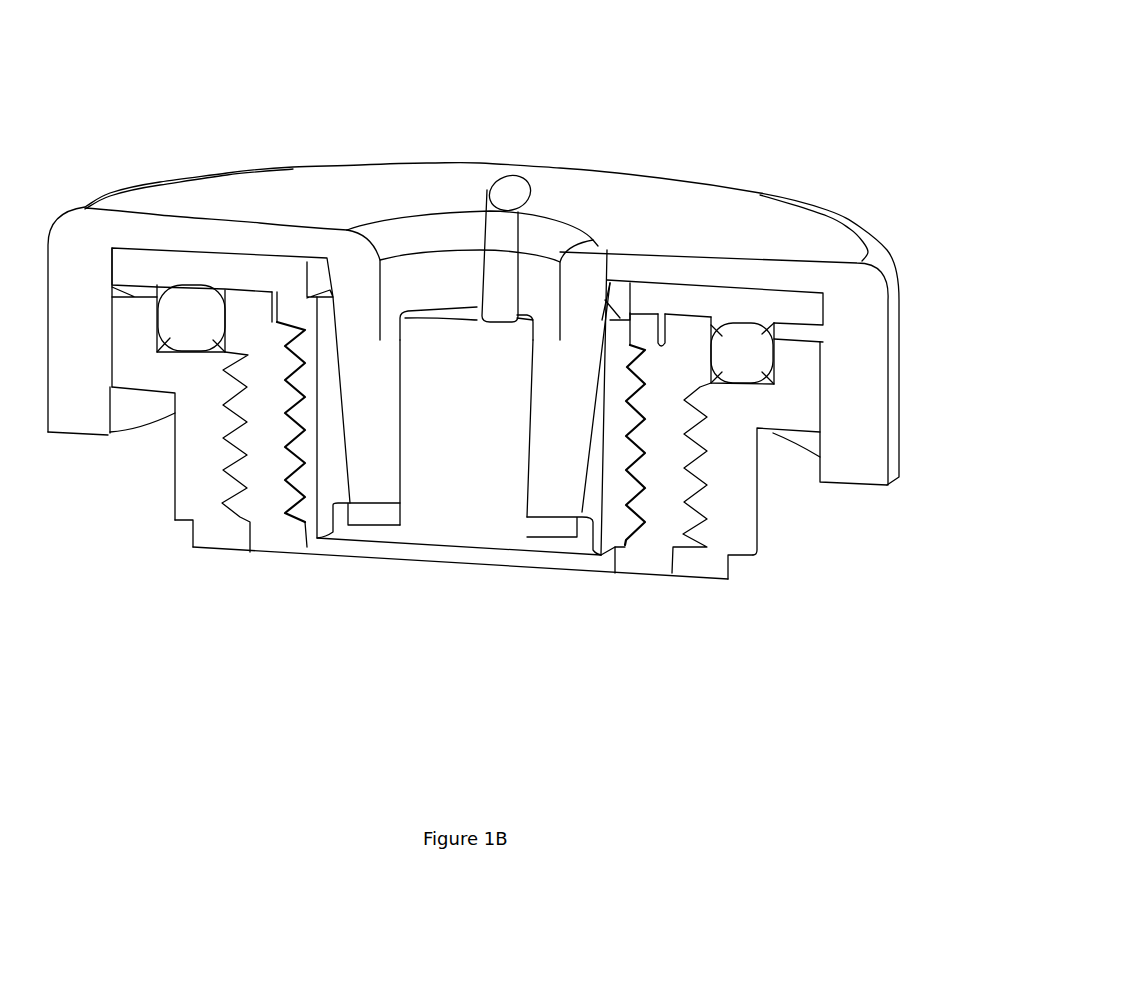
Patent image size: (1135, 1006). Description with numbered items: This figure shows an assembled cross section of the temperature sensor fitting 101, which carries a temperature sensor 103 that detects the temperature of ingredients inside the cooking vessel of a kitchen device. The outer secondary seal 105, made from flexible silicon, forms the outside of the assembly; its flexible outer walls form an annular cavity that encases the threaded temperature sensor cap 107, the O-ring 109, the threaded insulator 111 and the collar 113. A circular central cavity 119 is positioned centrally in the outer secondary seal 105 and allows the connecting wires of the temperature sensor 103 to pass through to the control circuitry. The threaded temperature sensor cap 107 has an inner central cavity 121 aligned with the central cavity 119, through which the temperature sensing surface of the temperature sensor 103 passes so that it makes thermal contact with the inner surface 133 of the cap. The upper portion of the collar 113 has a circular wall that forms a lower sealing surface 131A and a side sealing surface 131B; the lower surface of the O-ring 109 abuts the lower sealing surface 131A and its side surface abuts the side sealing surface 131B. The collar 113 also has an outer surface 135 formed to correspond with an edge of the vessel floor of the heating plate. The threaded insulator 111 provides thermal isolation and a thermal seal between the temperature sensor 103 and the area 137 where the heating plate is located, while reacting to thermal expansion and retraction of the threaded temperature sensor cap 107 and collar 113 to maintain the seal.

The temperature sensor fitting 101 is at (473, 253).
The temperature sensor 103 is at (459, 431).
The outer secondary seal 105 is at (467, 366).
The threaded temperature sensor cap 107 is at (467, 295).
The O-ring 109 is at (465, 334).
The threaded insulator 111 is at (461, 432).
The collar 113 is at (466, 443).
The central cavity 119 is at (553, 238).
The inner central cavity 121 is at (622, 299).
The lower sealing surface 131A is at (772, 382).
The side sealing surface 131B is at (777, 360).
The inner surface 133 is at (455, 546).
The outer surface 135 is at (191, 533).
The area 137 is at (475, 526).